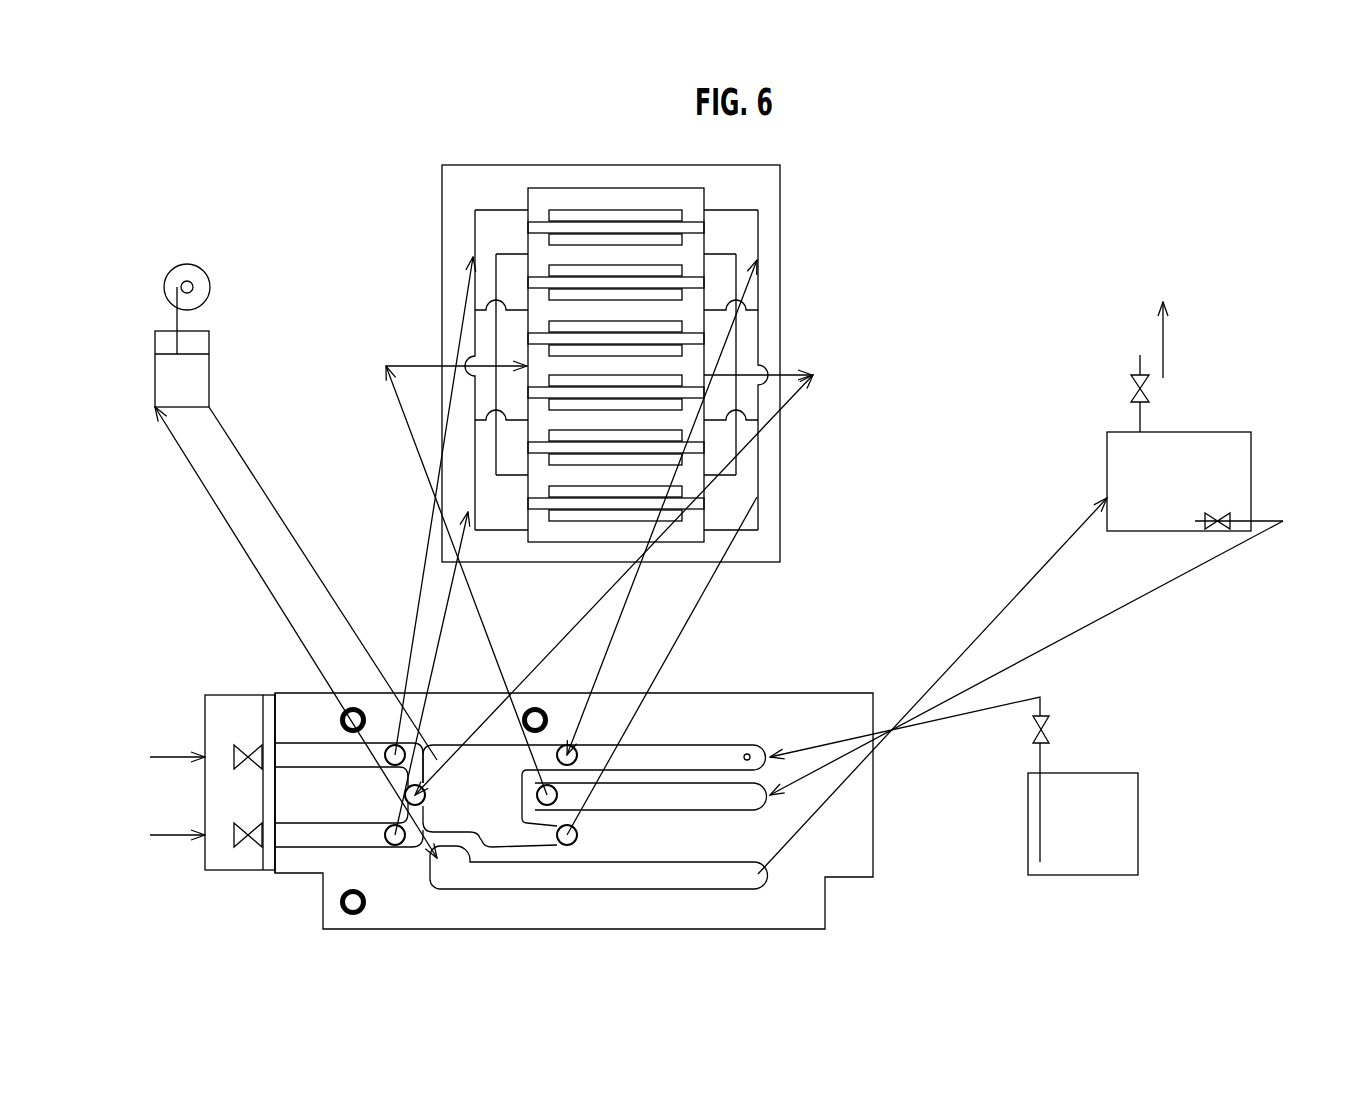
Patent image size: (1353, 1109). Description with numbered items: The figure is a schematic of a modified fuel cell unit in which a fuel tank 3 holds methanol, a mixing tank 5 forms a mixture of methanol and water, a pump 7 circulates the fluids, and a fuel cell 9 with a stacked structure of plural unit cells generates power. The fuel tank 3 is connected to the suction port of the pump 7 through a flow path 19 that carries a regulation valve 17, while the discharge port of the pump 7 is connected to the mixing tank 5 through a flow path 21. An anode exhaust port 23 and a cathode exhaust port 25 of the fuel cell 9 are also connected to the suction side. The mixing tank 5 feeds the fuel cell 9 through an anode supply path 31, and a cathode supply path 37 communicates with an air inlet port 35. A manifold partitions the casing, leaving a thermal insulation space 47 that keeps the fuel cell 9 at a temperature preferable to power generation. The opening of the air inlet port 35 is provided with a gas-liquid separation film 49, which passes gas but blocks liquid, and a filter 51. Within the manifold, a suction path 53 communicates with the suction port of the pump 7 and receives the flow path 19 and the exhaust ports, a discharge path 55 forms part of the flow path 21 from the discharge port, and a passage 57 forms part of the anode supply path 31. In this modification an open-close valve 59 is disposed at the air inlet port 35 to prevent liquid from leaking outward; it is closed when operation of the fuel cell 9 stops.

The fuel tank 3 is at (1128, 810).
The mixing tank 5 is at (1232, 465).
The pump 7 is at (207, 367).
The fuel cell 9 is at (712, 203).
The regulation valve 17 is at (1052, 728).
The flow path 19 is at (968, 712).
The flow path 21 is at (258, 487).
The anode exhaust port 23 is at (563, 638).
The cathode exhaust port 25 is at (683, 637).
The anode supply path 31 is at (493, 640).
The air inlet port 35 is at (303, 748).
The cathode supply path 37 is at (437, 638).
The thermal insulation space 47 is at (822, 691).
The gas-liquid separation film 49 is at (268, 718).
The filter 51 is at (213, 852).
The suction path 53 is at (497, 802).
The discharge path 55 is at (648, 878).
The passage 57 is at (675, 800).
The open-close valve 59 is at (240, 823).